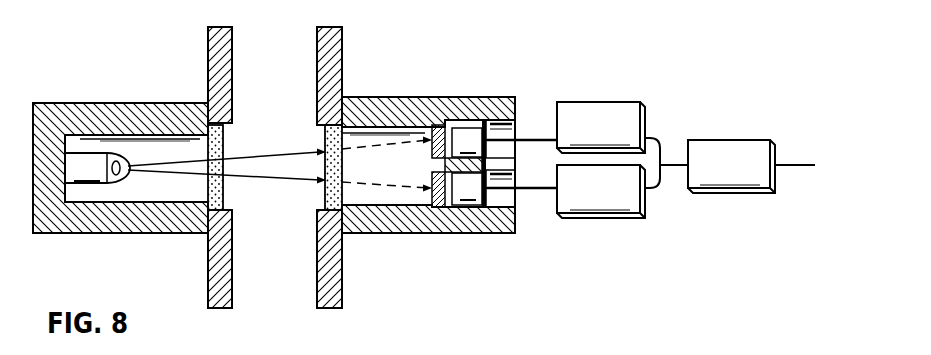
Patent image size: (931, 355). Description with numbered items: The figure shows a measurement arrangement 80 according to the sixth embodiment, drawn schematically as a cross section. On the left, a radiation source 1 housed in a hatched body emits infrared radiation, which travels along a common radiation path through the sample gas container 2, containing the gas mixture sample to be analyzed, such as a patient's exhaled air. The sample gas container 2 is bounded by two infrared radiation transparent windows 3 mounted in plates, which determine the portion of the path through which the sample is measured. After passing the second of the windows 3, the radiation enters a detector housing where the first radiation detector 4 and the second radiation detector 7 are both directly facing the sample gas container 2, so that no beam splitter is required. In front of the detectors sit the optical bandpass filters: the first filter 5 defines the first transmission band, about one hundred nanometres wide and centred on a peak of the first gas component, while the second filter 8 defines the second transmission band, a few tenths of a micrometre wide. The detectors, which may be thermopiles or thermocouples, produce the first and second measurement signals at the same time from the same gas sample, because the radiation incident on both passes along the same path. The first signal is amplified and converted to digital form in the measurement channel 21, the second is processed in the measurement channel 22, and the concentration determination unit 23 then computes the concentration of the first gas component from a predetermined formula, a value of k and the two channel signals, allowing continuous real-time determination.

The light emitting element 1 is at (116, 152).
The sample gas container 2 is at (281, 208).
The infrared radiation transparent windows 3 is at (227, 128).
The first radiation detector 4 is at (504, 98).
The first filter 5 is at (441, 128).
The second radiation detector 7 is at (468, 188).
The second filter 8 is at (438, 208).
The measurement channel 21 is at (636, 102).
The measurement channel 22 is at (600, 215).
The concentration determination unit 23 is at (727, 140).
The measurement arrangement 80 is at (591, 63).